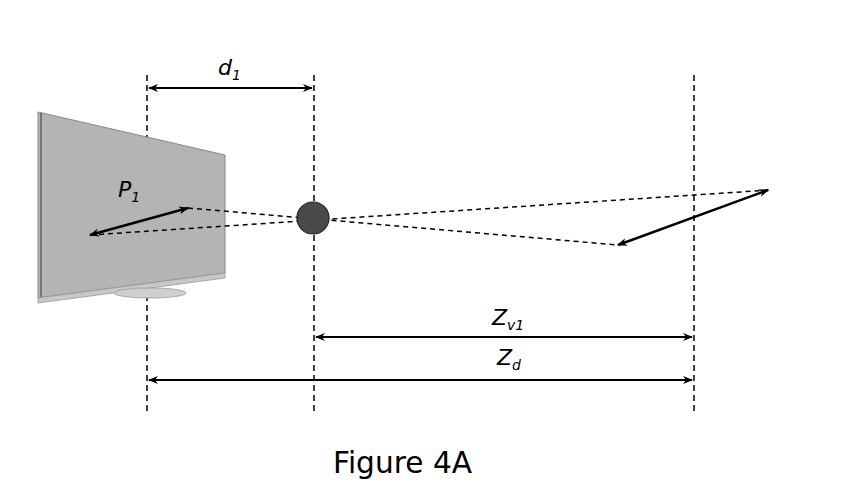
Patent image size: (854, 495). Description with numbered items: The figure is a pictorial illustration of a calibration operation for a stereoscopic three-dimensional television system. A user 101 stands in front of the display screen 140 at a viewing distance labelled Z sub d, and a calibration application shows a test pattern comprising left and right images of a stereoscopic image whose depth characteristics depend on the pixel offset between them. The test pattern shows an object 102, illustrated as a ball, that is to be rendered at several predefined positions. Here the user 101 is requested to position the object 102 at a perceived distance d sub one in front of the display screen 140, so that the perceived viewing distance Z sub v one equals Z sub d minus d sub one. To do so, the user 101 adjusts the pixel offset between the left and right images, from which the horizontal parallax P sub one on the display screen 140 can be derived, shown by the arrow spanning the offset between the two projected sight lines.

The display screen 140 is at (73, 330).
The object 102 is at (362, 190).
The user 101 is at (768, 245).